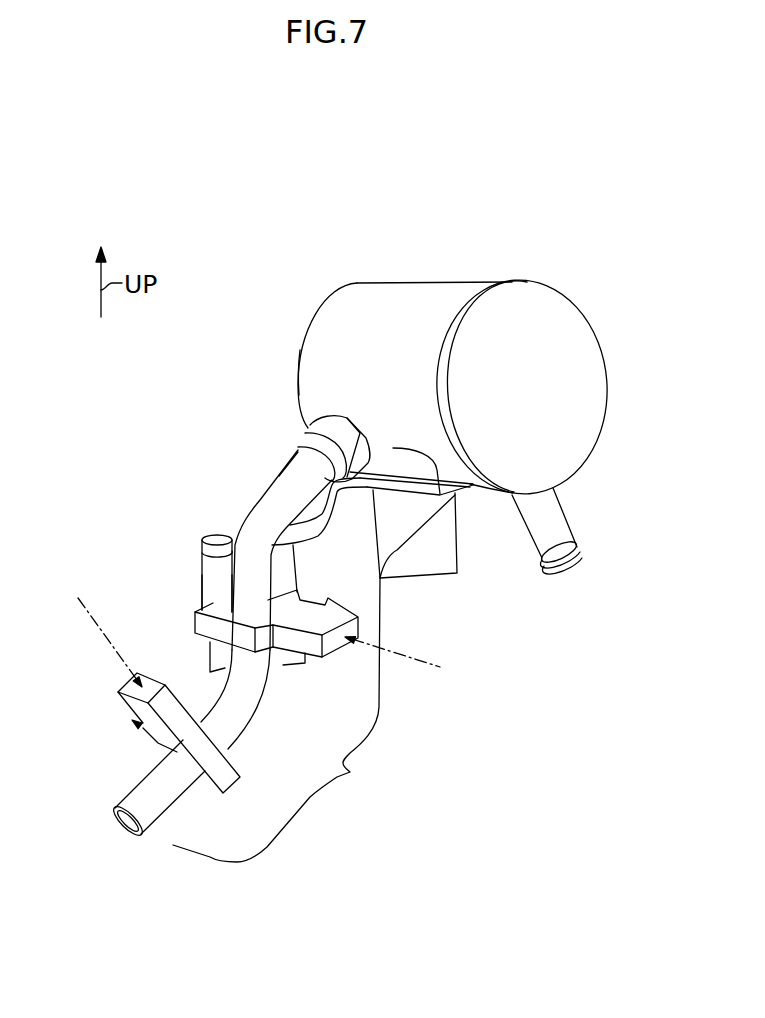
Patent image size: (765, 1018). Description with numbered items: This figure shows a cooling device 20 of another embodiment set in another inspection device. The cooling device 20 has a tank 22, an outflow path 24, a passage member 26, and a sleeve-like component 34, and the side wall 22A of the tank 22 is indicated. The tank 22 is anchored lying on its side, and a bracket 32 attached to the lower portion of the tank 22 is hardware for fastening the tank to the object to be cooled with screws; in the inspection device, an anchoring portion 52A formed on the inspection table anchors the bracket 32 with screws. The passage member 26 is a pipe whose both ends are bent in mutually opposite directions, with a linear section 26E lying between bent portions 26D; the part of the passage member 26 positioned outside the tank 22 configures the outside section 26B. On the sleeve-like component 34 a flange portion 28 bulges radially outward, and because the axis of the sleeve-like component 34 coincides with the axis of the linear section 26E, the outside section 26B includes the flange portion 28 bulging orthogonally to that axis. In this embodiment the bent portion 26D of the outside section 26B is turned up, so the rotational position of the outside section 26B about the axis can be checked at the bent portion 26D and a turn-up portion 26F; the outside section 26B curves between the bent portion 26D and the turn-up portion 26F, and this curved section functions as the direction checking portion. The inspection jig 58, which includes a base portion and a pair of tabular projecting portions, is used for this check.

The cooling device 20 is at (564, 244).
The tank 22 is at (444, 281).
The canister side wall 22A is at (310, 348).
The outflow path 24 is at (572, 522).
The passage member 26 is at (238, 509).
The outside section 26B is at (350, 772).
The bent portion 26D is at (202, 570).
The linear section 26E is at (280, 477).
The turn-up portion 26F is at (233, 744).
The flange portion 28 is at (294, 433).
The bracket 32 is at (313, 535).
The sleeve-like component 34 is at (290, 449).
The anchoring portion 52A is at (460, 553).
The inspection jig 58 is at (185, 625).